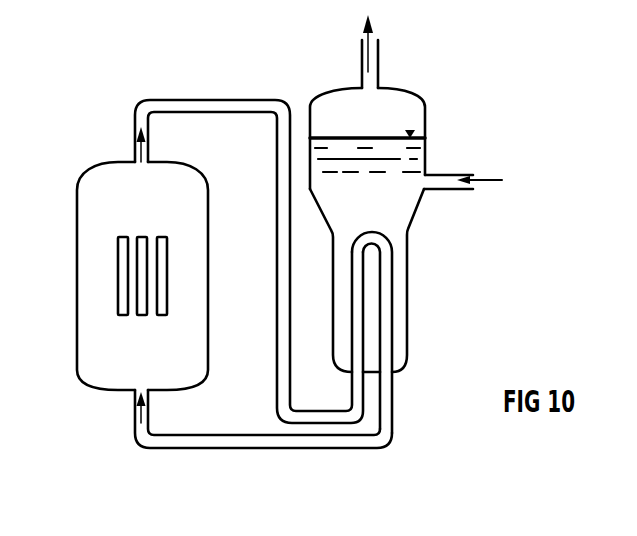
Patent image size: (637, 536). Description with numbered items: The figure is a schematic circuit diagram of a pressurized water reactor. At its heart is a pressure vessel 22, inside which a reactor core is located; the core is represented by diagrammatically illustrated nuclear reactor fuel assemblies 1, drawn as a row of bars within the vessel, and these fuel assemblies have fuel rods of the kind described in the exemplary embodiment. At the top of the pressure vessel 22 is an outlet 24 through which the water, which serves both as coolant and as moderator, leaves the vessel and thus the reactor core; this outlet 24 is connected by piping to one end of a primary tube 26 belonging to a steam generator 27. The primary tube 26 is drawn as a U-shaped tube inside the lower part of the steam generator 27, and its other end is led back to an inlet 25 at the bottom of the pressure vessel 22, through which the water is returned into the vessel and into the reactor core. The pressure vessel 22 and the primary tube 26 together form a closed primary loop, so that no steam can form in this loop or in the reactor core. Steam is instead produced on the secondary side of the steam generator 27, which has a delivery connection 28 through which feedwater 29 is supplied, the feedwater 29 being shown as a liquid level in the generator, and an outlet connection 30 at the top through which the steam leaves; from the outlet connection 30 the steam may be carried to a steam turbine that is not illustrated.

The nuclear reactor fuel assemblies 1 is at (173, 257).
The pressure vessel 22 is at (76, 217).
The outlet 24 is at (136, 130).
The inlet 25 is at (134, 411).
The primary tube 26 is at (386, 312).
The steam generator 27 is at (427, 112).
The delivery connection 28 is at (460, 191).
The feedwater 29 is at (393, 200).
The outlet connection 30 is at (379, 50).